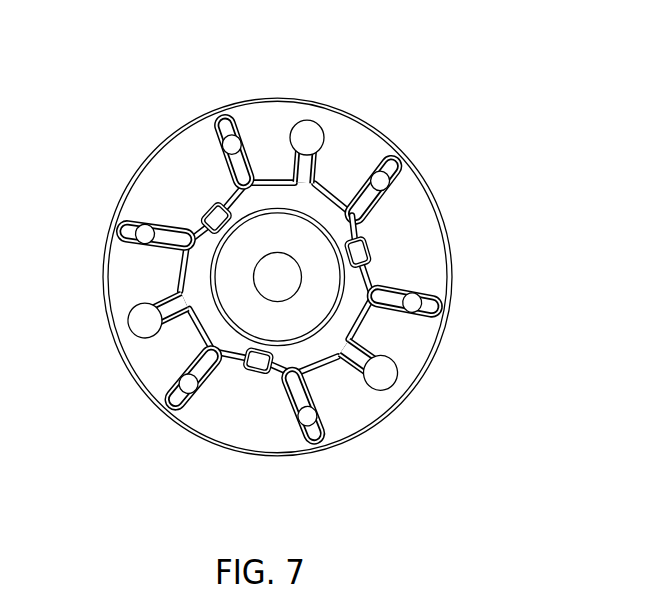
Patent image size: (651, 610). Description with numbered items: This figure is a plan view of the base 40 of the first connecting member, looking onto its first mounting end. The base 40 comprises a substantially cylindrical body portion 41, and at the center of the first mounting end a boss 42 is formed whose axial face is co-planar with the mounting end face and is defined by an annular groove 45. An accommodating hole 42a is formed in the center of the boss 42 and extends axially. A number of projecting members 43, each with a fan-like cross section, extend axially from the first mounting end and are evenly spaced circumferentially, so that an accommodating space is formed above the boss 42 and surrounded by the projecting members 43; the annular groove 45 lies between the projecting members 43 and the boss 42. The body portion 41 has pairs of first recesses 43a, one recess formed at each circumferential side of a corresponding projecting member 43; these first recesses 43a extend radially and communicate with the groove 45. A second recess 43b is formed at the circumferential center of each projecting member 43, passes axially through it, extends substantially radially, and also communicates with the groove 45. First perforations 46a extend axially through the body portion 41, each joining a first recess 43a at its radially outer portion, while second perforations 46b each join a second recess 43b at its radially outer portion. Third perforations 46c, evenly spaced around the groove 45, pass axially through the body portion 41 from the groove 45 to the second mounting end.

The base 40 is at (465, 98).
The body portion 41 is at (188, 155).
The boss 42 is at (256, 318).
The accommodating hole 42a is at (273, 278).
The projecting member 43 is at (157, 352).
The first recess 43a is at (167, 238).
The second recess 43b is at (398, 337).
The annular groove 45 is at (312, 207).
The first perforation 46a is at (137, 247).
The second perforation 46b is at (378, 372).
The third perforation 46c is at (358, 250).